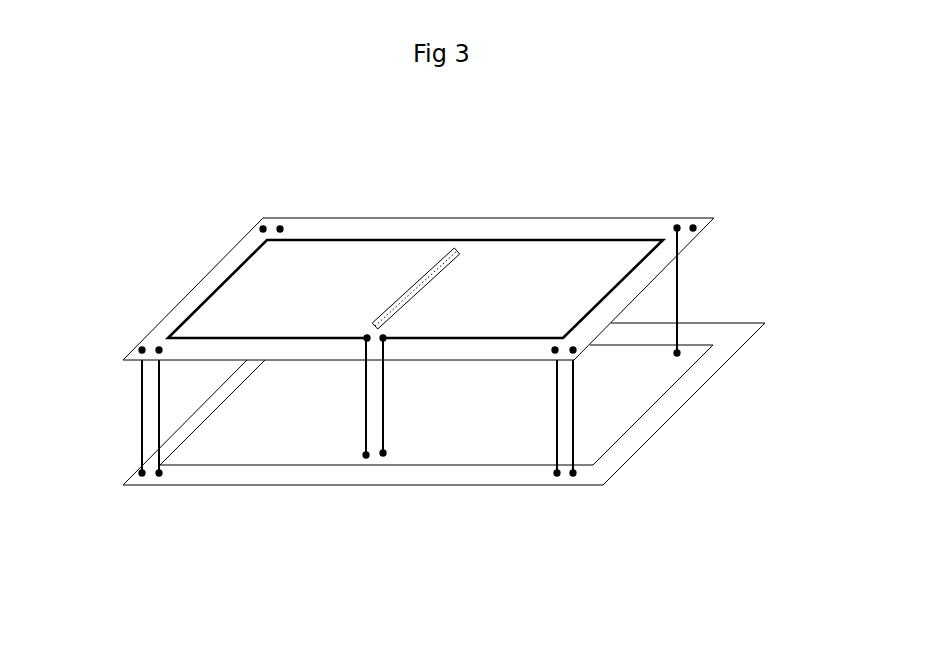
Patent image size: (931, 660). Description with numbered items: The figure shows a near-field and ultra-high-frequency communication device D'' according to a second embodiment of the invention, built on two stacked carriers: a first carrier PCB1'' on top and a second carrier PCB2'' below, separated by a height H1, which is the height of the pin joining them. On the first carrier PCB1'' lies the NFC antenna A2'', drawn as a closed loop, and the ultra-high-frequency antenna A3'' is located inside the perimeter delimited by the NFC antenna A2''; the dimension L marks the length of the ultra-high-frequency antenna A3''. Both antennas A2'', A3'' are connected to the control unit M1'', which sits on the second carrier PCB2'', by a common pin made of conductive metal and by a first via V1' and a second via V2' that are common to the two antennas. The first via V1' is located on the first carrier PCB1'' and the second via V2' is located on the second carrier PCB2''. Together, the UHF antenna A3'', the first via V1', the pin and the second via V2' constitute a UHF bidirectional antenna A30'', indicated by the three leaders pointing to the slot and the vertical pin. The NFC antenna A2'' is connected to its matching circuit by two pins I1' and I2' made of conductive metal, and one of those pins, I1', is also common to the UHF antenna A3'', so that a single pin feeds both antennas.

The near-field and ultra-high-frequency communication device D'' is at (425, 345).
The first carrier PCB1'' is at (442, 252).
The second carrier PCB2'' is at (466, 404).
The NFC antenna A2'' is at (415, 253).
The UHF antenna A3'' is at (441, 245).
The UHF bidirectional antenna A30'' is at (358, 294).
The control unit M1'' is at (443, 411).
The height of the pin H1 is at (123, 485).
The length of the ultra-high-frequency antenna L is at (522, 253).
The first via V1' is at (315, 463).
The second via V2' is at (346, 446).
The first pin I1' is at (419, 487).
The second pin I2' is at (453, 433).